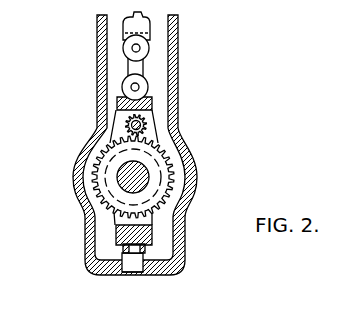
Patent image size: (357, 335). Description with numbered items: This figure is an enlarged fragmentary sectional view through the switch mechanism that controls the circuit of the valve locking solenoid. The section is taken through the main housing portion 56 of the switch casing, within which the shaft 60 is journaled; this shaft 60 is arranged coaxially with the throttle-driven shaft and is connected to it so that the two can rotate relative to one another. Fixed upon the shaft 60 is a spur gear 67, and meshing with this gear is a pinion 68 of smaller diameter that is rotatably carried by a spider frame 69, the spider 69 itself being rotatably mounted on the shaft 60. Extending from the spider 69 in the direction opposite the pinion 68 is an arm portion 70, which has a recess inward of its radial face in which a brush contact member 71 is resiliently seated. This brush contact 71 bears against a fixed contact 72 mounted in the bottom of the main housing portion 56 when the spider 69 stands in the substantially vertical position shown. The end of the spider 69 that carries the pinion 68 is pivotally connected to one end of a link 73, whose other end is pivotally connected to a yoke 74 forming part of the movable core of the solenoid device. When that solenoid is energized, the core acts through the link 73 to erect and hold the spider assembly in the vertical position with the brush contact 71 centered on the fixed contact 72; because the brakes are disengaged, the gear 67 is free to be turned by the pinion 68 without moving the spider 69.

The main housing portion 56 is at (175, 125).
The shaft 60 is at (122, 188).
The spur gear 67 is at (176, 170).
The pinion 68 is at (126, 122).
The spider frame 69 is at (110, 133).
The arm portion 70 is at (116, 233).
The brush contact member 71 is at (140, 263).
The fixed contact 72 is at (132, 273).
The link 73 is at (133, 67).
The yoke 74 is at (133, 26).